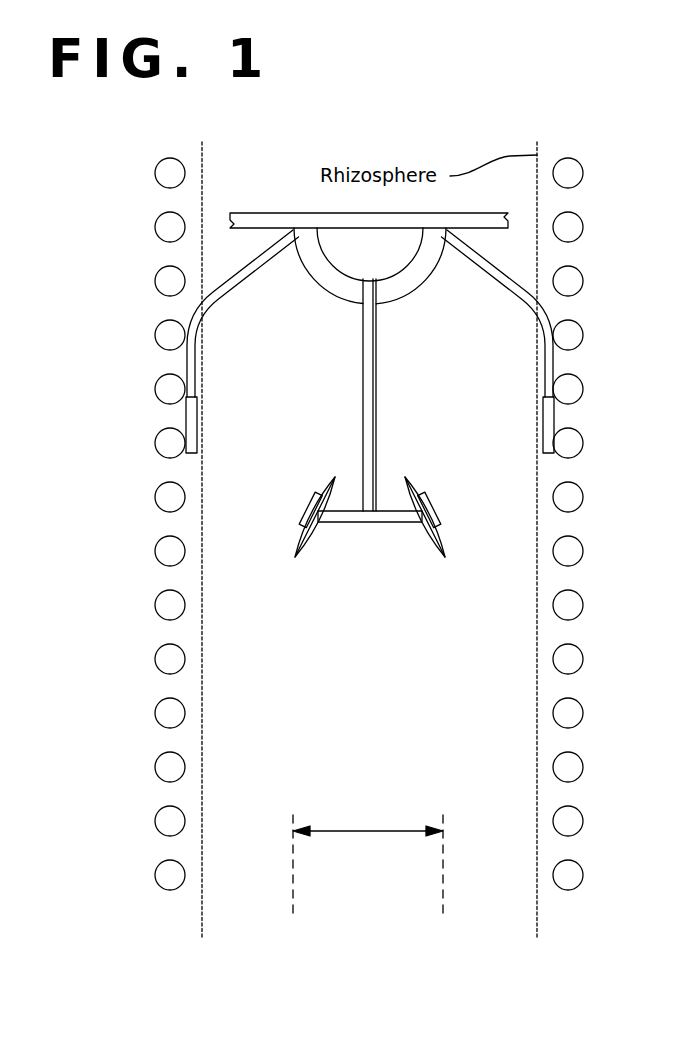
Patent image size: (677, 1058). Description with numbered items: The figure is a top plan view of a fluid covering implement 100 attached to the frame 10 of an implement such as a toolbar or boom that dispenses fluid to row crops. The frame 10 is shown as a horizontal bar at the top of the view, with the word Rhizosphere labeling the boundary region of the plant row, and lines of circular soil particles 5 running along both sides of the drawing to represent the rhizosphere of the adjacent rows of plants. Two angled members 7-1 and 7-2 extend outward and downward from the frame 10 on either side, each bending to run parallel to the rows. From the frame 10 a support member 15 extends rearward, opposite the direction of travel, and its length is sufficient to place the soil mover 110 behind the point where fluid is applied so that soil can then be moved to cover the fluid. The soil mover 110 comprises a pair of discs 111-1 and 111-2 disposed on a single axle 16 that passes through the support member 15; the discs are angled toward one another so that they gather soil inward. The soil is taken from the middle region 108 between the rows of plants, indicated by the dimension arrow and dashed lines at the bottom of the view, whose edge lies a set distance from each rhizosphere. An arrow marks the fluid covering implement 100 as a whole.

The soil particles 5 is at (583, 172).
The frame 10 is at (276, 213).
The first leg 7-1 is at (253, 263).
The second leg 7-2 is at (468, 246).
The support member 15 is at (376, 344).
The axle 16 is at (333, 523).
The soil mover 110 is at (355, 517).
The disc 111-1 is at (318, 494).
The disc 111-2 is at (410, 490).
The fluid covering implement 100 is at (370, 422).
The middle region 108 is at (353, 830).